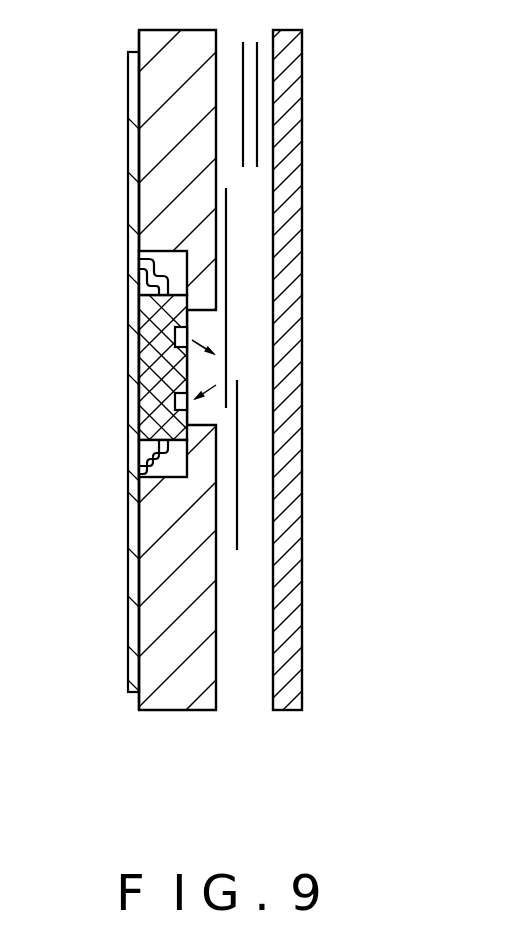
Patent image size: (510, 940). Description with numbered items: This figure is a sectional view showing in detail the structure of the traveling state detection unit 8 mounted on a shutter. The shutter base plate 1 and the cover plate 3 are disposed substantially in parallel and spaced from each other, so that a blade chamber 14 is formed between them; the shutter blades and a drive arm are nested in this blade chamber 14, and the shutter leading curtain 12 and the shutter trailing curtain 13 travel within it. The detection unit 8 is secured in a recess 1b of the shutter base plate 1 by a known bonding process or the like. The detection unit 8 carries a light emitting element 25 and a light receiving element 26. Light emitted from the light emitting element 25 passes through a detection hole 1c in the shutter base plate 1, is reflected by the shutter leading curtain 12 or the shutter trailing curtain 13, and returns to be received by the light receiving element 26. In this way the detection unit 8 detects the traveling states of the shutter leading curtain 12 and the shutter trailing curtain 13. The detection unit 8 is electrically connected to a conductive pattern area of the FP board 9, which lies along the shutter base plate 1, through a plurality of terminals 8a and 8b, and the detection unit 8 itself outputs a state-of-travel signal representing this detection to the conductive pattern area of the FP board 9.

The shutter base plate 1 is at (166, 700).
The recess 1b is at (130, 550).
The detection hole 1c is at (210, 333).
The cover plate 3 is at (292, 403).
The traveling state detection unit 8 is at (147, 393).
The terminal 8a is at (148, 262).
The terminal 8b is at (142, 458).
The FP board 9 is at (127, 150).
The shutter leading curtain 12 is at (260, 101).
The shutter trailing curtain 13 is at (237, 522).
The blade chamber 14 is at (240, 703).
The light emitting element 25 is at (152, 339).
The light receiving element 26 is at (165, 403).